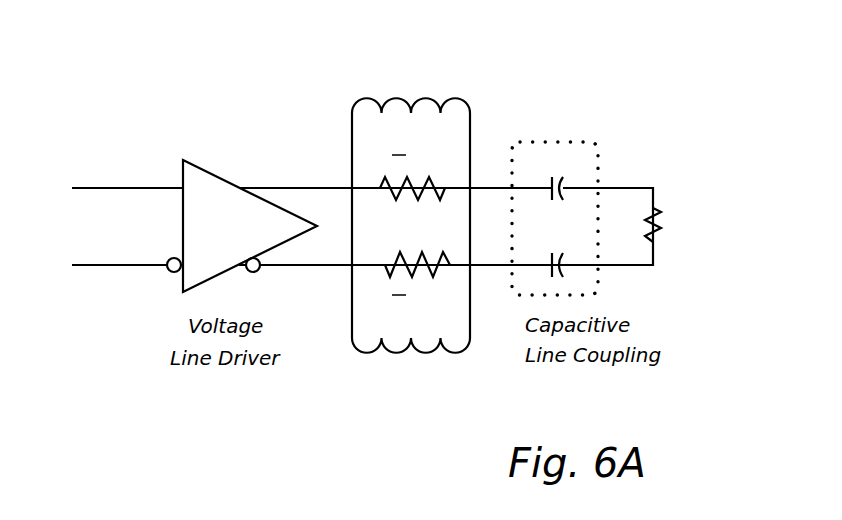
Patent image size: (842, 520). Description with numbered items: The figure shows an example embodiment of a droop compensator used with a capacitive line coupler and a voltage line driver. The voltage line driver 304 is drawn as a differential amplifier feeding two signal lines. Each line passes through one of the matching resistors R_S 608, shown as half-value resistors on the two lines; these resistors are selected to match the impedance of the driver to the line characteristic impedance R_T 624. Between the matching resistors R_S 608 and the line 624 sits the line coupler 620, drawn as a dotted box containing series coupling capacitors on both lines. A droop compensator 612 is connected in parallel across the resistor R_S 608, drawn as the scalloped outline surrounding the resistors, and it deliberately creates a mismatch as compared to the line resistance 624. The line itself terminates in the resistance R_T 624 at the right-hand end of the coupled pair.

The voltage line driver 304 is at (242, 226).
The matching resistors R_S 608 is at (381, 196).
The droop compensator 612 is at (455, 98).
The line coupler 620 is at (572, 142).
The line characteristic impedance R_T 624 is at (658, 208).